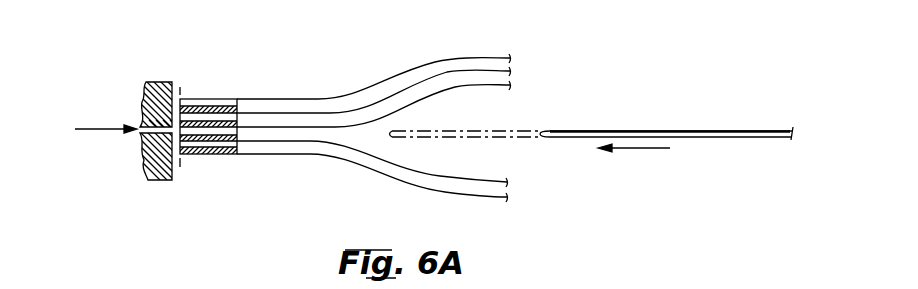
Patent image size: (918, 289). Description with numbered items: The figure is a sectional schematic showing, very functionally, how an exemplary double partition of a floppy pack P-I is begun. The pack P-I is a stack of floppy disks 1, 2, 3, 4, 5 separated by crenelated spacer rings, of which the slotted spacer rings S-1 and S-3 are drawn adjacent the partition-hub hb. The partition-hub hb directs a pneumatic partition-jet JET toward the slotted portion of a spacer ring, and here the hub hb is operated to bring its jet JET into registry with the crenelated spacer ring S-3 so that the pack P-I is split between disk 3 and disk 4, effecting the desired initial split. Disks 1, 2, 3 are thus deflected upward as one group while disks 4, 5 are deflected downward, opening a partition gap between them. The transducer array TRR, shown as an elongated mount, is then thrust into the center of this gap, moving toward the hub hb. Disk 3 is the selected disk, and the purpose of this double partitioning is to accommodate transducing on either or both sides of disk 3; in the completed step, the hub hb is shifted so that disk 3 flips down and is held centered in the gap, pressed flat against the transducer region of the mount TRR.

The partition-hub hb is at (147, 82).
The partition-jet JET is at (89, 141).
The crenelated spacer ring S-1 is at (237, 109).
The crenelated spacer ring S-3 is at (237, 135).
The floppy disk 1 is at (497, 58).
The floppy disk 2 is at (447, 72).
The floppy disk 3 is at (400, 98).
The floppy disk 4 is at (445, 178).
The floppy disk 5 is at (497, 199).
The transducer array TRR is at (738, 138).
The floppy pack P-I is at (597, 35).